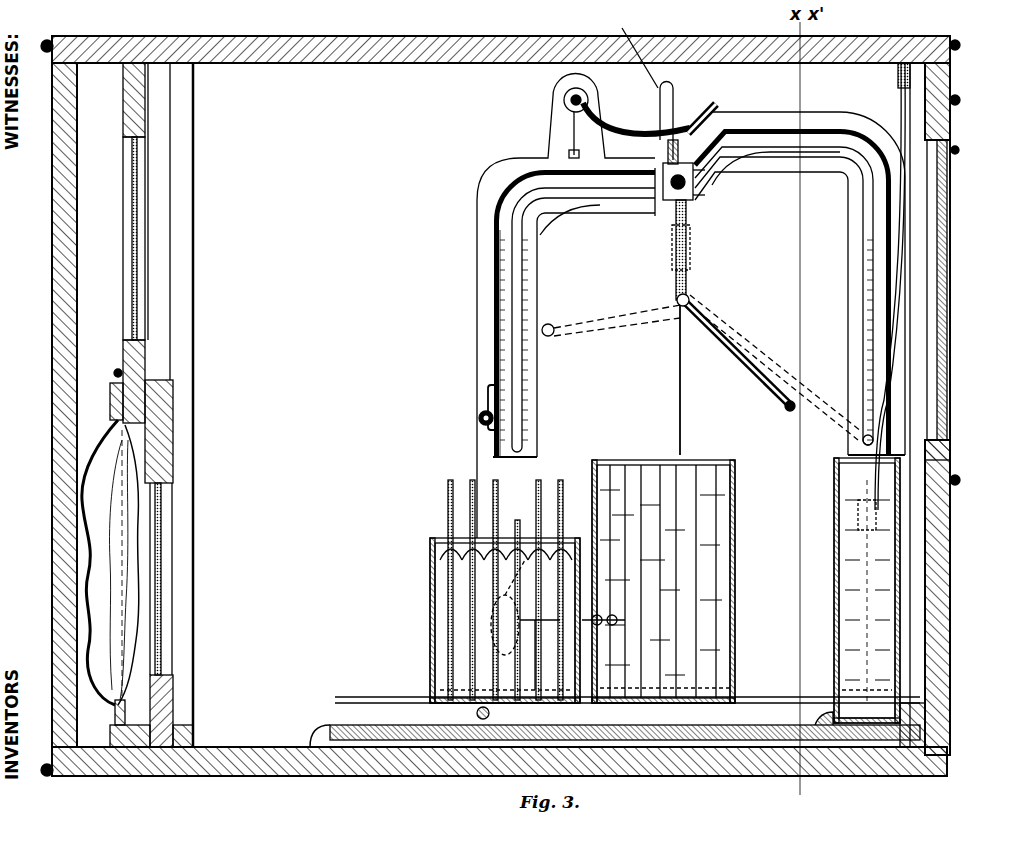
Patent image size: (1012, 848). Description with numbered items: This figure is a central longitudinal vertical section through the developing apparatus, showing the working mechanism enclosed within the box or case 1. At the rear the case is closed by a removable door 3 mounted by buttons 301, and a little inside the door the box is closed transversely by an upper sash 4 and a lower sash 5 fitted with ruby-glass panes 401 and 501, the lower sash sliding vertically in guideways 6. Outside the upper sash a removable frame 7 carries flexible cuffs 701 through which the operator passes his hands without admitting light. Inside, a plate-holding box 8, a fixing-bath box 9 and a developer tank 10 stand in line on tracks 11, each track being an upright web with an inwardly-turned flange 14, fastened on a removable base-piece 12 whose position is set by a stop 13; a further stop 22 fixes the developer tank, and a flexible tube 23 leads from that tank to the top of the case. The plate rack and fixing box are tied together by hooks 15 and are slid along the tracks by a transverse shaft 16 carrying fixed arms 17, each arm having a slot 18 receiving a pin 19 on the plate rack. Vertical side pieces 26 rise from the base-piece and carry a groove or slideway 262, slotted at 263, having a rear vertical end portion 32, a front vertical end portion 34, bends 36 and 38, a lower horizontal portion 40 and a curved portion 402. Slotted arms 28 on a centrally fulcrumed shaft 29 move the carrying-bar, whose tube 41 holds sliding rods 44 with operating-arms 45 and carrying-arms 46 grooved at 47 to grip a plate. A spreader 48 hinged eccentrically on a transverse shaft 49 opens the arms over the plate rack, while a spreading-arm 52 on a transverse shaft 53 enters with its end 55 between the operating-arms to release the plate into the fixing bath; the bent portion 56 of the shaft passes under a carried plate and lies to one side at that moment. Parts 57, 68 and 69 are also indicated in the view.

The box or case 1 is at (330, 120).
The removable door 3 is at (62, 291).
The buttons 301 is at (47, 46).
The upper sash 4 is at (138, 212).
The ruby-glass pane 401 is at (148, 273).
The curved portion 402 is at (740, 165).
The lower sash 5 is at (162, 598).
The ruby-glass pane 501 is at (165, 630).
The guideways 6 is at (186, 682).
The frame 7 is at (110, 403).
The flexible cuffs 701 is at (110, 548).
The plate-holding box or rack 8 is at (432, 608).
The fixing-bath box 9 is at (735, 600).
The developer box or tank 10 is at (840, 530).
The tracks 11 is at (385, 698).
The removable board or base-piece 12 is at (375, 742).
The stop 13 is at (312, 744).
The inwardly-turned flange 14 is at (335, 724).
The hooks 15 is at (588, 622).
The transverse shaft 16 is at (516, 607).
The fixed arms 17 is at (445, 560).
The slot 18 is at (490, 713).
The pin 19 is at (548, 703).
The stop 22 is at (826, 715).
The flexible tube 23 is at (915, 300).
The vertical side pieces 26 is at (615, 410).
The slotted arms 28 is at (762, 347).
The shaft 29 is at (708, 363).
The vertical end portion 32 is at (500, 308).
The vertical end portion 34 is at (905, 272).
The bend 36 is at (497, 197).
The bend 38 is at (866, 136).
The horizontal portion 40 is at (592, 190).
The tube 41 is at (660, 198).
The sliding rod 44 is at (690, 195).
The operating-arm 45 is at (668, 160).
The carrying-arm 46 is at (670, 250).
The groove 47 is at (670, 280).
The spreader 48 is at (490, 396).
The transverse shaft 49 is at (478, 418).
The spreading-arm 52 is at (628, 133).
The transverse shaft 53 is at (565, 104).
The end of spreading-arm 55 is at (712, 104).
The bent portion 56 is at (572, 332).
The valve body 57 is at (698, 185).
The wall block 68 is at (945, 551).
The bar 69 is at (945, 343).
The groove or slideway 262 is at (608, 210).
The slot 263 is at (520, 312).